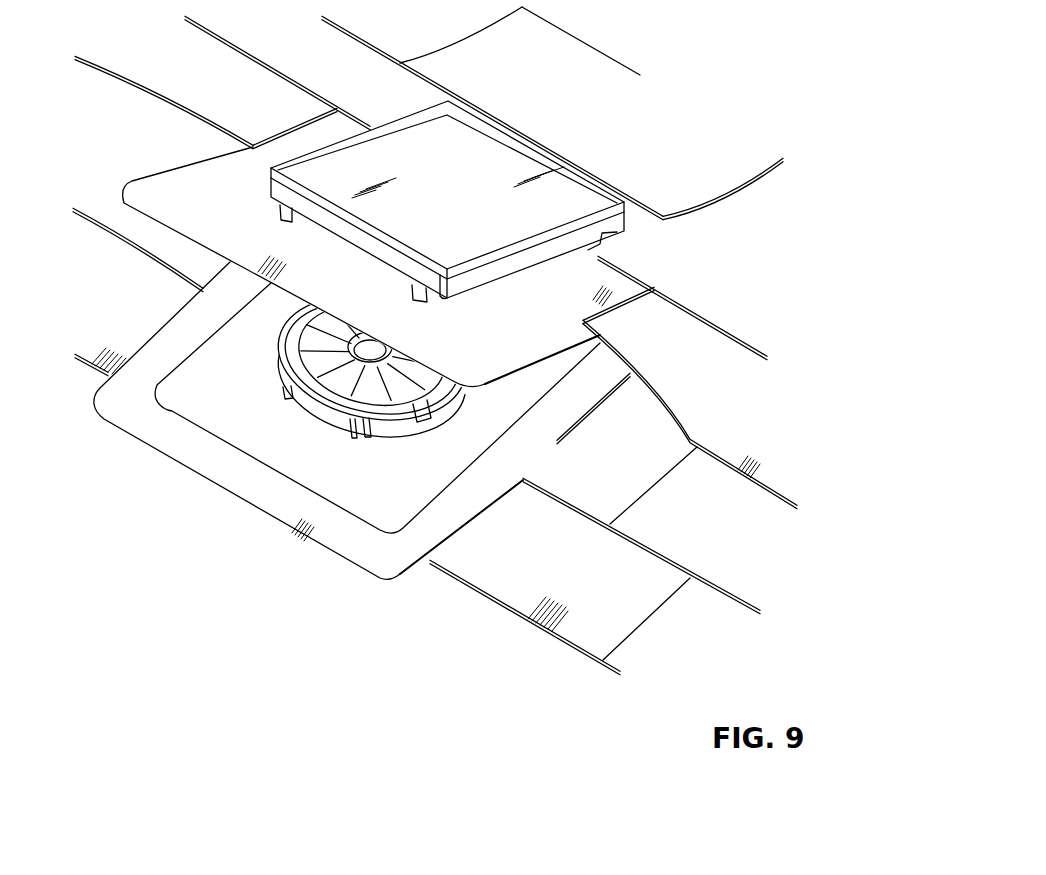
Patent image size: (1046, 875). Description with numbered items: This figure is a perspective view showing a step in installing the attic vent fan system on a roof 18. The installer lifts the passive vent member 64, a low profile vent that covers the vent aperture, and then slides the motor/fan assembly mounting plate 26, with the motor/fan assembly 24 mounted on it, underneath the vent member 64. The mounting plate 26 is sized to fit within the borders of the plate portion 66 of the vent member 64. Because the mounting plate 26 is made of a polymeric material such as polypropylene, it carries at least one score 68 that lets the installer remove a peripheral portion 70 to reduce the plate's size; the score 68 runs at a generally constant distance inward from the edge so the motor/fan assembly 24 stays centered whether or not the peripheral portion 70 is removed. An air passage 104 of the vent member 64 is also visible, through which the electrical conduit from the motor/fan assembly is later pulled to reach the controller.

The roof 18 is at (717, 175).
The motor/fan assembly 24 is at (330, 383).
The motor/fan assembly mounting plate 26 is at (280, 423).
The passive vent member 64 is at (533, 187).
The plate portion 66 is at (532, 355).
The score 68 is at (402, 530).
The peripheral portion 70 is at (425, 523).
The air passage 104 is at (335, 265).